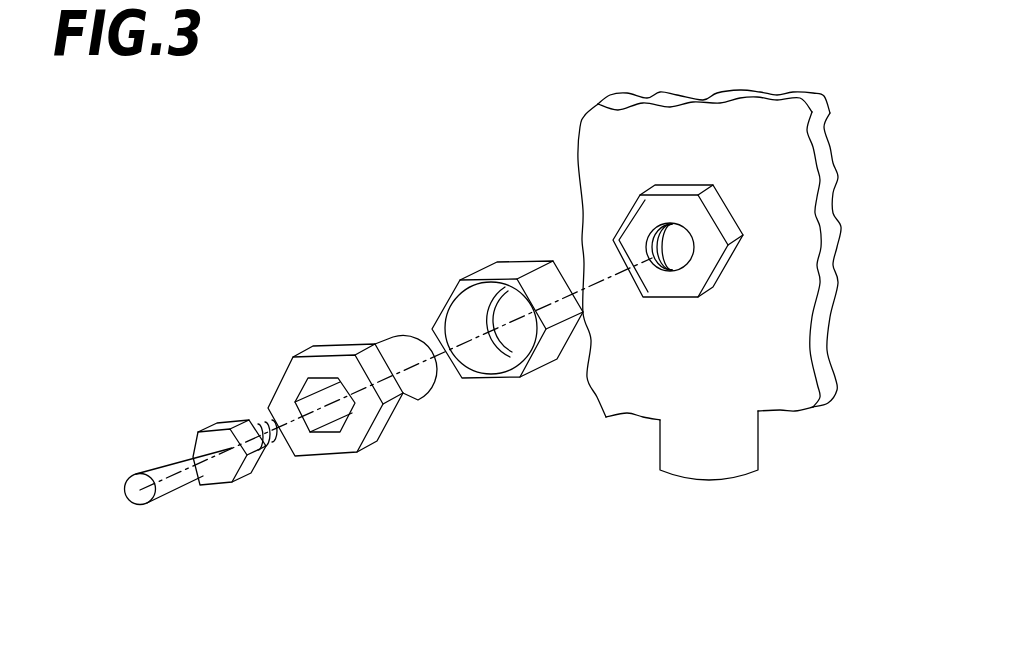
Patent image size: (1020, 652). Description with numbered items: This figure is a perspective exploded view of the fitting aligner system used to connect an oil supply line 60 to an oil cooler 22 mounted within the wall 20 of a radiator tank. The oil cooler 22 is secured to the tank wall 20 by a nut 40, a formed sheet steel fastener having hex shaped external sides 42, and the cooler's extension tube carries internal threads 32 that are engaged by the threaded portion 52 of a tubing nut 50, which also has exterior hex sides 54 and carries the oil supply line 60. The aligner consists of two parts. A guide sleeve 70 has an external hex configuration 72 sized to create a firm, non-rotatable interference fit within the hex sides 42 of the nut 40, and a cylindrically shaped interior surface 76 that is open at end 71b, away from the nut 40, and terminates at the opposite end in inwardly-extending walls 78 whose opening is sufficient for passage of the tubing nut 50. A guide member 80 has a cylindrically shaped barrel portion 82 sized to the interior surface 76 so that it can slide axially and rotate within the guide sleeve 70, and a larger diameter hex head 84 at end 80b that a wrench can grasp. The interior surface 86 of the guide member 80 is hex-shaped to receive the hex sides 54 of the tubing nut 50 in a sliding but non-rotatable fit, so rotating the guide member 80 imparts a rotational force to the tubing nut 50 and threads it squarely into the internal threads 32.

The radiator tank wall 20 is at (780, 150).
The oil cooler 22 is at (750, 443).
The internal threads 32 is at (674, 248).
The nut 40 is at (748, 207).
The hex shaped external sides 42 is at (727, 223).
The tubing nut 50 is at (208, 458).
The threaded portion 52 is at (270, 448).
The exterior hex sides 54 is at (228, 420).
The oil supply line 60 is at (168, 496).
The guide sleeve 70 is at (518, 324).
The end 71b is at (474, 378).
The external hex configuration 72 is at (521, 261).
The cylindrically shaped interior surface 76 is at (470, 312).
The inwardly-extending walls 78 is at (509, 348).
The guide member 80 is at (344, 369).
The end 80b is at (293, 366).
The cylindrically shaped barrel portion 82 is at (420, 389).
The hex head 84 is at (340, 345).
The interior surface 86 is at (322, 418).